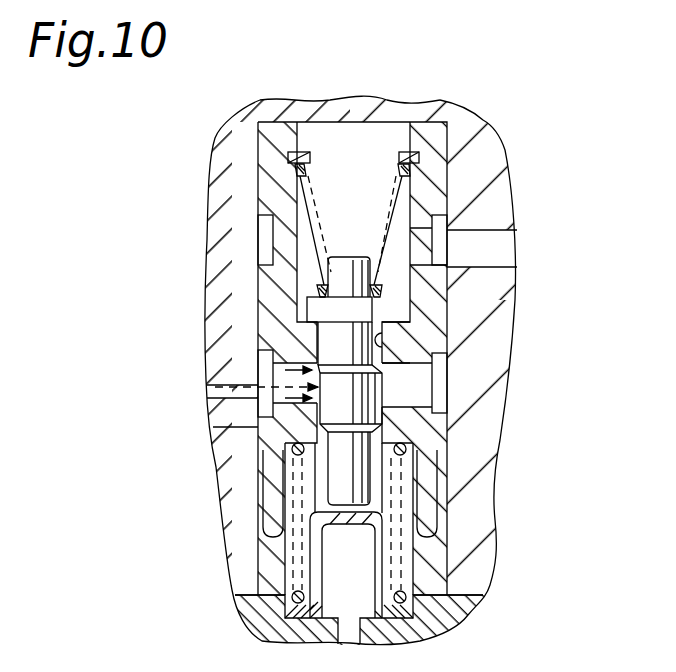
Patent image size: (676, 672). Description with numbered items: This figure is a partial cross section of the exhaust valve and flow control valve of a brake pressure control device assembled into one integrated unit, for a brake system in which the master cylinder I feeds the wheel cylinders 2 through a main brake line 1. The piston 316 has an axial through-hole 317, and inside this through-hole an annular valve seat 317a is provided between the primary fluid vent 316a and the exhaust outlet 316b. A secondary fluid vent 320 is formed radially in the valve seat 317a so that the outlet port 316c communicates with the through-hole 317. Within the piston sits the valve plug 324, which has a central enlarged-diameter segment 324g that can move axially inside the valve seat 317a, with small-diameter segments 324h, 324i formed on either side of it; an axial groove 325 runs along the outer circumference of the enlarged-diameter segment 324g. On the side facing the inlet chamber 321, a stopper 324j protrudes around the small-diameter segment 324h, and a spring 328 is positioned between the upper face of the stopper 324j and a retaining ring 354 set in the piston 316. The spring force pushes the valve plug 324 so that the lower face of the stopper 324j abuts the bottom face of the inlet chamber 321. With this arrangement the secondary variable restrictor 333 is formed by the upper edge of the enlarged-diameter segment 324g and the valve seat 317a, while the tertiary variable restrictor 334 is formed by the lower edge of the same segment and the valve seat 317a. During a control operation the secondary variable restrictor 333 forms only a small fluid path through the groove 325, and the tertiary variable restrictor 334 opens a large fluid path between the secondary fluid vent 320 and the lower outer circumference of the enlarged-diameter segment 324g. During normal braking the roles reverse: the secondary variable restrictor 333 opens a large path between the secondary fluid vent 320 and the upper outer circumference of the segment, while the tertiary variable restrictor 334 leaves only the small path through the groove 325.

The piston 316 is at (440, 118).
The through-hole 317 is at (382, 132).
The retaining ring 354 is at (300, 150).
The inlet chamber 321 is at (318, 190).
The spring 328 is at (418, 180).
The valve plug 324 is at (332, 257).
The small-diameter segment 324h is at (338, 275).
The stopper 324j is at (318, 313).
The secondary variable restrictor 333 is at (316, 366).
The groove 325 is at (300, 383).
The wheel cylinder 2 is at (200, 403).
The outlet port 316c is at (263, 397).
The tertiary variable restrictor 334 is at (300, 452).
The enlarged-diameter segment 324g is at (337, 483).
The small-diameter segment 324i is at (352, 553).
The primary fluid vent 316a is at (420, 237).
The main brake line 1 is at (523, 248).
The master cylinder I is at (502, 257).
The valve seat 317a is at (420, 380).
The secondary fluid vent 320 is at (420, 378).
The exhaust outlet 316b is at (365, 556).